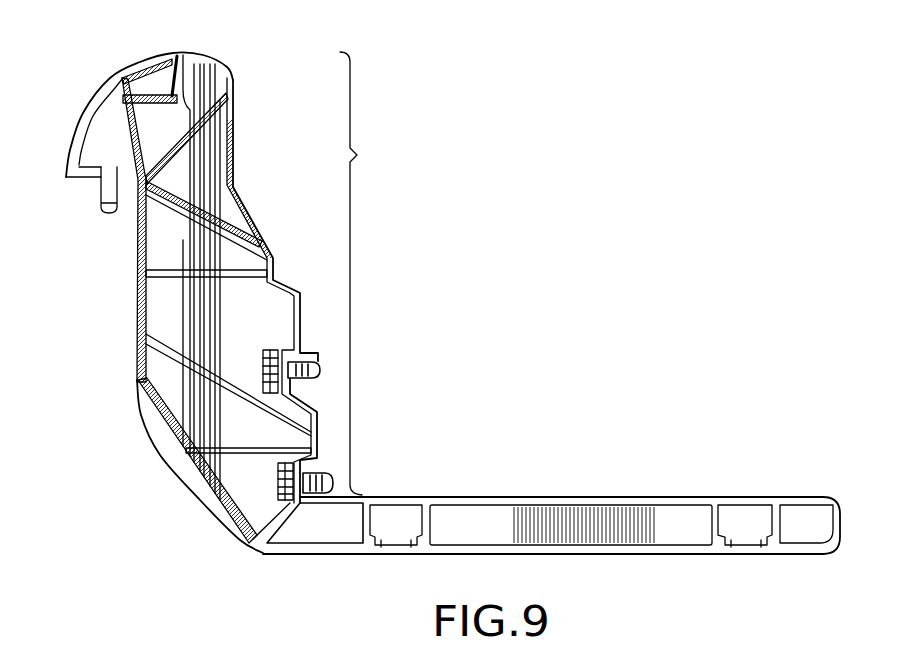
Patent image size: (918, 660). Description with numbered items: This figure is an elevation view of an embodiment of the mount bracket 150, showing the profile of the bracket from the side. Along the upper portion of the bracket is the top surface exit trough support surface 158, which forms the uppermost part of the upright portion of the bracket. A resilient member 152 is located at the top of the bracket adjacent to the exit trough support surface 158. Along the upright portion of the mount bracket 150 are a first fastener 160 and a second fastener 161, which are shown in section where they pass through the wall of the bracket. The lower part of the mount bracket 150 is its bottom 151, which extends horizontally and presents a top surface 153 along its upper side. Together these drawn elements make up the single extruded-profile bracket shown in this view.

The mount bracket 150 is at (515, 280).
The bottom 151 is at (462, 527).
The resilient member 152 is at (80, 110).
The top surface 153 is at (608, 497).
The top surface exit trough support surface 158 is at (193, 53).
The first fastener 160 is at (257, 370).
The second fastener 161 is at (290, 522).